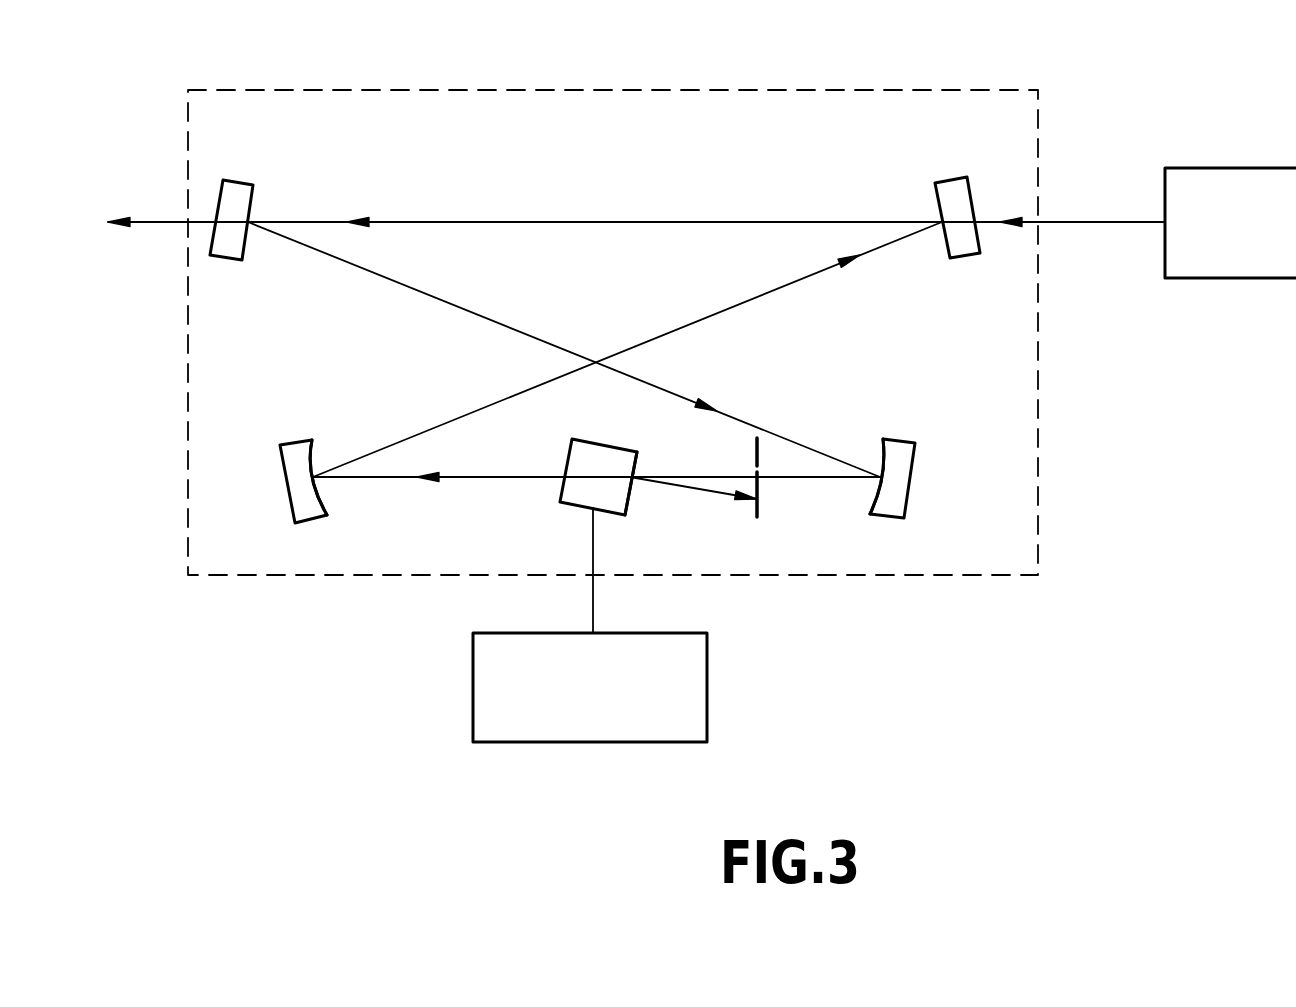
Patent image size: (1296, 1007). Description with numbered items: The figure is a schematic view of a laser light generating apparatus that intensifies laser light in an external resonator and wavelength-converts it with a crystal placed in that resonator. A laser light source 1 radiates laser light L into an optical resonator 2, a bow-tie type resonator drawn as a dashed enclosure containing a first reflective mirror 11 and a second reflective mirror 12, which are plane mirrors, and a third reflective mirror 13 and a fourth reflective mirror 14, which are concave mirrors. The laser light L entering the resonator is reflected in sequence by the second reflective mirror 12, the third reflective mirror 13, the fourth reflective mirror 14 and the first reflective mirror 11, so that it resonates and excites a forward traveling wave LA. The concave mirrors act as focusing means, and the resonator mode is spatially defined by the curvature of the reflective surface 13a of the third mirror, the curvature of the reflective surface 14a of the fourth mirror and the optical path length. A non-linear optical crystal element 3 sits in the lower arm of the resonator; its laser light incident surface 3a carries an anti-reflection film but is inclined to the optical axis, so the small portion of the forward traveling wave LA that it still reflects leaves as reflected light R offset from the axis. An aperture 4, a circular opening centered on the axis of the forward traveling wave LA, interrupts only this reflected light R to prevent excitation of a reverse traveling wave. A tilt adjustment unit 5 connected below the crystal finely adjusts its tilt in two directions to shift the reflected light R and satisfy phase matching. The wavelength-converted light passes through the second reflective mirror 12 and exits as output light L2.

The laser light source 1 is at (1220, 168).
The optical resonator 2 is at (615, 90).
The non-linear optical crystal element 3 is at (573, 536).
The laser light incident surface 3a is at (629, 493).
The aperture 4 is at (760, 507).
The tilt adjustment unit 5 is at (703, 687).
The first reflective mirror 11 is at (953, 188).
The second reflective mirror 12 is at (240, 183).
The third reflective mirror 13 is at (901, 448).
The reflective surface of the third reflective mirror 13a is at (882, 447).
The fourth reflective mirror 14 is at (301, 452).
The reflective surface of the fourth reflective mirror 14a is at (313, 455).
The laser light L is at (1088, 220).
The forward traveling wave LA is at (658, 220).
The output light L2 is at (158, 220).
The reflected light R is at (712, 495).